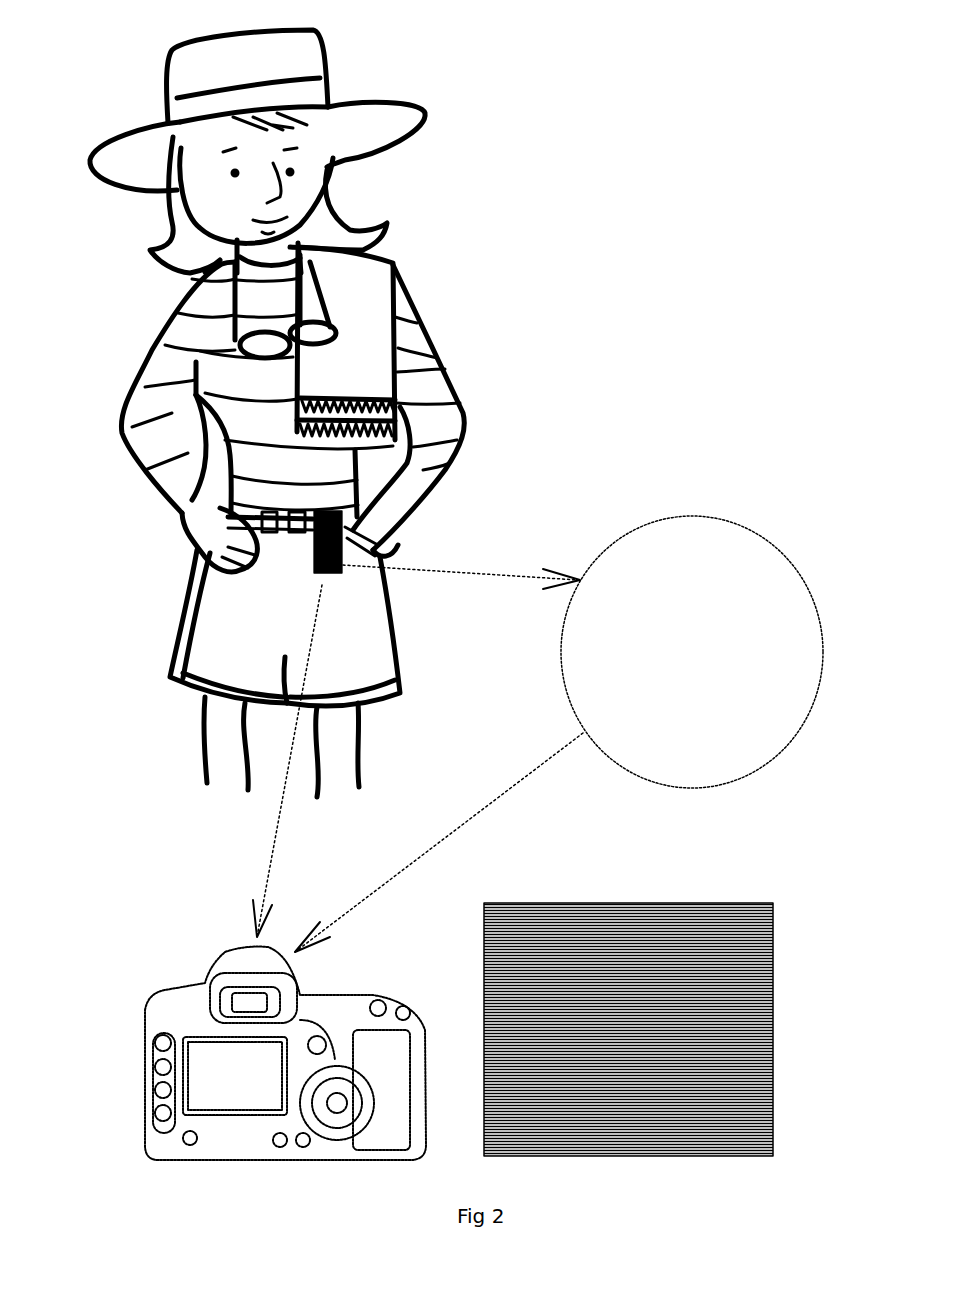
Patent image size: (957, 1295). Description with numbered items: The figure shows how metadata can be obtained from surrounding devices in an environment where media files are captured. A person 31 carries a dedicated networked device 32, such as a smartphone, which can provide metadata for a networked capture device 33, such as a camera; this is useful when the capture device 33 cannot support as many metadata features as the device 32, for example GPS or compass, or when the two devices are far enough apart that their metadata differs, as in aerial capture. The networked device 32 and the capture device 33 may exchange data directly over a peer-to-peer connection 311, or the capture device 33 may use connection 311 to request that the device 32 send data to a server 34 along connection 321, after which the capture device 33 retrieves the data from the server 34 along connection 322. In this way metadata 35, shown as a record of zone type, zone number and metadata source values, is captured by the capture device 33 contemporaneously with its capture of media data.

The person / user 31 is at (95, 141).
The dedicated networked device 32 is at (346, 541).
The connection 321 is at (478, 571).
The connection 311 is at (281, 840).
The connection 322 is at (490, 815).
The networked capture device 33 is at (115, 1147).
The server 34 is at (783, 553).
The metadata 35 is at (774, 1033).